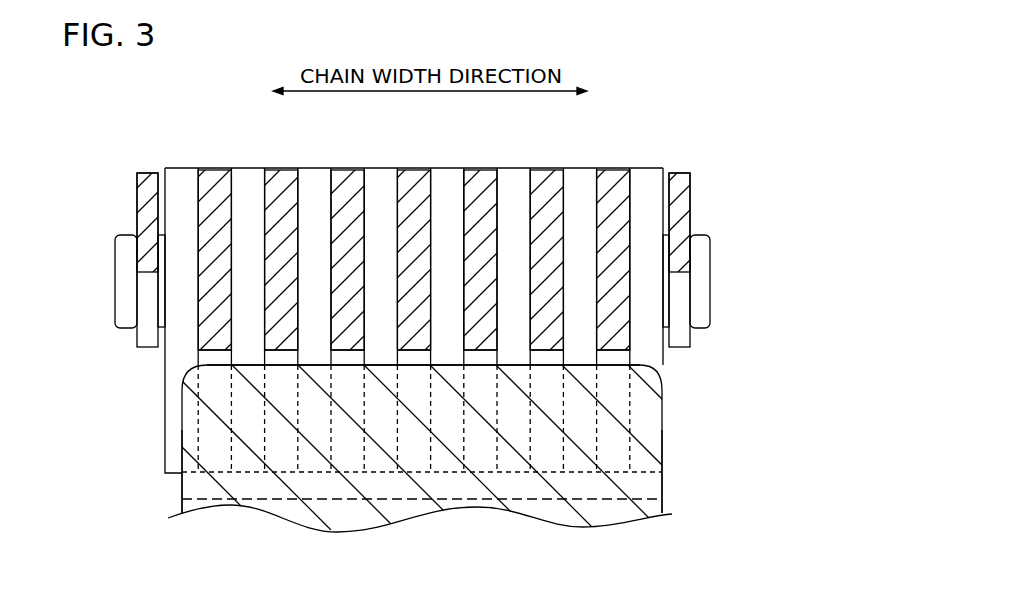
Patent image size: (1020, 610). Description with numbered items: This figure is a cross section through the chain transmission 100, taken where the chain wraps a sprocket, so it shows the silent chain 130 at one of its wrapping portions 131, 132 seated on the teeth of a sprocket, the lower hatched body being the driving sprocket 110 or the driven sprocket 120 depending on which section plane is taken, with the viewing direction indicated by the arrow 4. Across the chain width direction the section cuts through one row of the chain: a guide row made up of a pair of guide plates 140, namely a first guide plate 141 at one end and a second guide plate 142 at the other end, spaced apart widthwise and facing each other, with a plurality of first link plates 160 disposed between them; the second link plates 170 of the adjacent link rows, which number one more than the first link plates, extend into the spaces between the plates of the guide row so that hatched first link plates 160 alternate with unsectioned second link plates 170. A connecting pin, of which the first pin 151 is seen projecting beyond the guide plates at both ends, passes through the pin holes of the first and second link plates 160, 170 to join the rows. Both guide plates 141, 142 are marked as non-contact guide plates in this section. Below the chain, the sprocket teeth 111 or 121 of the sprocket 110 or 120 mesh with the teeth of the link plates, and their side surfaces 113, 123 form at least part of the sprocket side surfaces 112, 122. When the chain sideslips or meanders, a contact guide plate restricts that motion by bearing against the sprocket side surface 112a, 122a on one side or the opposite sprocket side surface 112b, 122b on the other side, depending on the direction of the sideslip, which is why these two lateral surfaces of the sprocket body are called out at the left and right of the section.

The transmission device 100 is at (742, 152).
The silent chain 130 is at (452, 127).
The wrapping portion 131 is at (414, 135).
The wrapping portion 132 is at (414, 135).
The second link plate 170 is at (247, 183).
The first link plate 160 is at (290, 193).
The guide plate 140 is at (453, 220).
The first guide plate 141 is at (685, 216).
The second guide plate 142 is at (147, 183).
The first pin 151 is at (118, 312).
The viewing direction arrow 4 is at (762, 320).
The driving sprocket 110 is at (429, 470).
The driven sprocket 120 is at (429, 470).
The sprocket teeth 111 is at (501, 367).
The sprocket teeth 121 is at (618, 362).
The side surface of sprocket teeth 113 is at (423, 439).
The side surface of sprocket teeth 123 is at (662, 430).
The side surface 112 is at (429, 459).
The side surface 122 is at (429, 459).
The sprocket side surface 112a is at (743, 491).
The sprocket side surface 122a is at (680, 505).
The sprocket side surface 112b is at (107, 492).
The sprocket side surface 122b is at (165, 504).